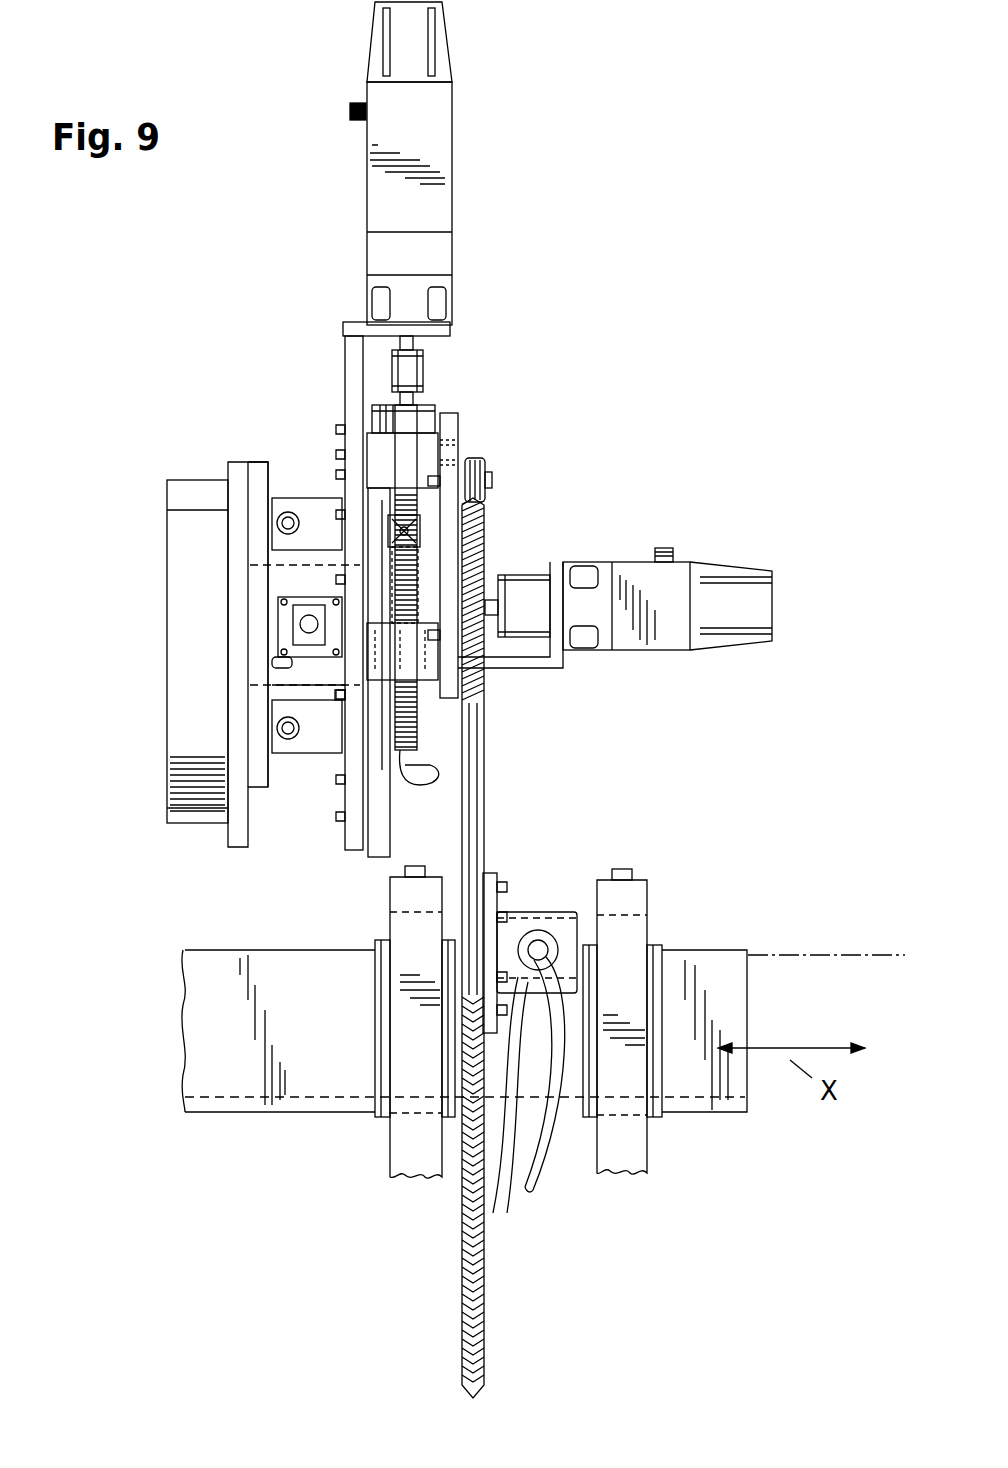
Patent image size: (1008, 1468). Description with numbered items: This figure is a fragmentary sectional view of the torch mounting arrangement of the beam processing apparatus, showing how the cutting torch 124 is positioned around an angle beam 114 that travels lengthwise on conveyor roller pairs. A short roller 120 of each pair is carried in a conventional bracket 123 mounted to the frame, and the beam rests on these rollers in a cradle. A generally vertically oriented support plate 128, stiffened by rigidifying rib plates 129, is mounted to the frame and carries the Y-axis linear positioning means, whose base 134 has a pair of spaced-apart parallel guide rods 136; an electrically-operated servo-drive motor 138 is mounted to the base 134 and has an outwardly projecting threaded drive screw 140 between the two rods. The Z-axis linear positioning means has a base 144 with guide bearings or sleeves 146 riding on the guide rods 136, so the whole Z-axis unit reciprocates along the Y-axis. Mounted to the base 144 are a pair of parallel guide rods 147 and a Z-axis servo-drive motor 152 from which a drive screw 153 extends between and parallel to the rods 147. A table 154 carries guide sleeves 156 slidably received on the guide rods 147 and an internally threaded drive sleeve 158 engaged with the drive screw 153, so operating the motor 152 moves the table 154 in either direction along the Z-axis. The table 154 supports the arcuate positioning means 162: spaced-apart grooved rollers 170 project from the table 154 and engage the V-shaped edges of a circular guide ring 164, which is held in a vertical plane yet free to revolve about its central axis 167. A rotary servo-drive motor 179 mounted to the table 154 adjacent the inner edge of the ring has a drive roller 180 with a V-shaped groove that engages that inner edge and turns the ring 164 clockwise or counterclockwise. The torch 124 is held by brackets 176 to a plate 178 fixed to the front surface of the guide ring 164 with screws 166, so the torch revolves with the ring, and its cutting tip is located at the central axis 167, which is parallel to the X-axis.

The angle beam 114 is at (718, 948).
The short roller 120 is at (375, 1105).
The bracket 123 is at (400, 1155).
The torch 124 is at (560, 912).
The support plate 128 is at (232, 462).
The rib plate 129 is at (175, 493).
The base 134 is at (255, 463).
The guide rod 136 is at (288, 512).
The servo-drive motor 138 is at (276, 664).
The drive screw 140 is at (303, 620).
The base 144 is at (352, 848).
The guide bearing 146 is at (318, 505).
The guide rod 147 is at (385, 858).
The servo-drive motor 152 is at (452, 150).
The drive screw 153 is at (415, 745).
The table 154 is at (455, 430).
The guide sleeve 156 is at (370, 440).
The drive sleeve 158 is at (425, 556).
The arcuate positioning means 162 is at (490, 688).
The guide ring 164 is at (484, 522).
The screw 166 is at (497, 1195).
The central axis 167 is at (845, 952).
The roller 170 is at (480, 462).
The bracket 176 is at (537, 912).
The plate 178 is at (497, 875).
The rotary servo-drive motor 179 is at (683, 560).
The drive roller 180 is at (485, 642).